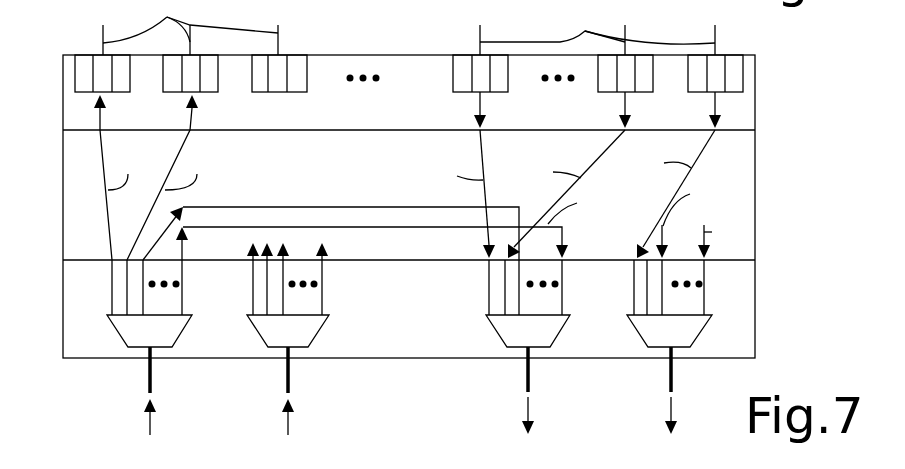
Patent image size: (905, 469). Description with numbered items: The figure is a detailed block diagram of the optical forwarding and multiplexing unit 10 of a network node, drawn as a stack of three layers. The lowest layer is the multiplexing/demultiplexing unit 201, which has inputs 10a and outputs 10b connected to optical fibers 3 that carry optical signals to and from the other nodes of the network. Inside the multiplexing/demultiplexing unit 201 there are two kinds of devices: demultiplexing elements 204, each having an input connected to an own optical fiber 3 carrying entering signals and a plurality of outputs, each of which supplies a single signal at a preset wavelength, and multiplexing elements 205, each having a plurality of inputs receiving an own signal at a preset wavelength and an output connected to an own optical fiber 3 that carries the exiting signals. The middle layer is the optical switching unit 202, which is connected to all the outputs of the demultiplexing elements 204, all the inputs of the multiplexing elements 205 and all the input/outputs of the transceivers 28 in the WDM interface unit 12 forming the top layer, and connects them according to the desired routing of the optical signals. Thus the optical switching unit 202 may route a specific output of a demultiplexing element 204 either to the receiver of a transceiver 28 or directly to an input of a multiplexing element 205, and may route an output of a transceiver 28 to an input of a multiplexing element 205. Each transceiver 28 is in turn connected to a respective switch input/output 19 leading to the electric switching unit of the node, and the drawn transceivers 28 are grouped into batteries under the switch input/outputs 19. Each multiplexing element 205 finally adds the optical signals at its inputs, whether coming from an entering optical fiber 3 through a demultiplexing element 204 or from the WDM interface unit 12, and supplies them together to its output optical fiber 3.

The optical fiber 3 is at (148, 377).
The optical forwarding and multiplexing unit 10 is at (50, 232).
The input 10a is at (153, 352).
The output 10b is at (530, 350).
The WDM interface unit 12 is at (743, 113).
The switch input/output 19 is at (409, 27).
The transceiver 28 is at (87, 62).
The multiplexing/demultiplexing unit 201 is at (737, 308).
The optical switching unit 202 is at (743, 204).
The demultiplexing element 204 is at (143, 332).
The multiplexing element 205 is at (507, 332).